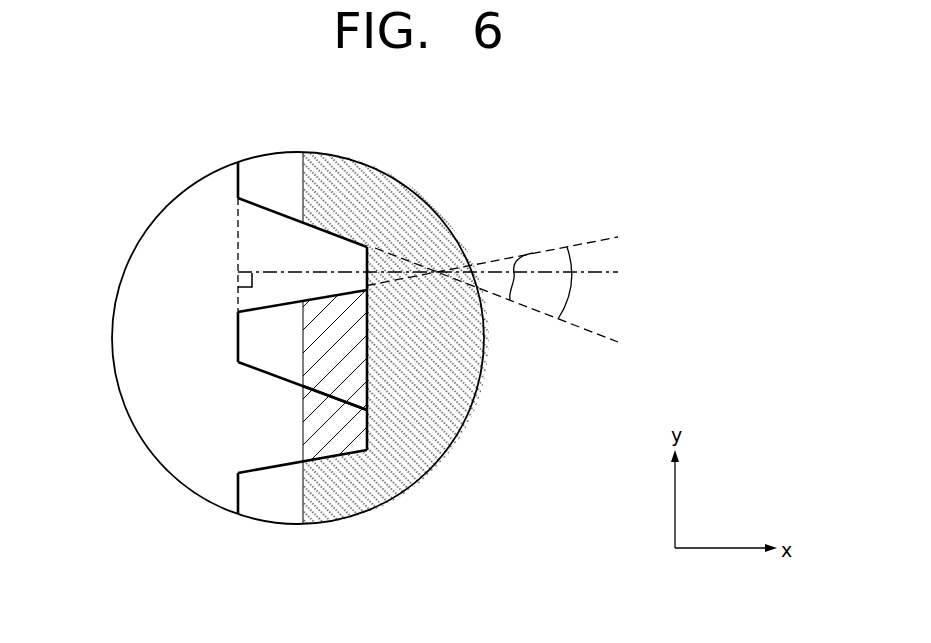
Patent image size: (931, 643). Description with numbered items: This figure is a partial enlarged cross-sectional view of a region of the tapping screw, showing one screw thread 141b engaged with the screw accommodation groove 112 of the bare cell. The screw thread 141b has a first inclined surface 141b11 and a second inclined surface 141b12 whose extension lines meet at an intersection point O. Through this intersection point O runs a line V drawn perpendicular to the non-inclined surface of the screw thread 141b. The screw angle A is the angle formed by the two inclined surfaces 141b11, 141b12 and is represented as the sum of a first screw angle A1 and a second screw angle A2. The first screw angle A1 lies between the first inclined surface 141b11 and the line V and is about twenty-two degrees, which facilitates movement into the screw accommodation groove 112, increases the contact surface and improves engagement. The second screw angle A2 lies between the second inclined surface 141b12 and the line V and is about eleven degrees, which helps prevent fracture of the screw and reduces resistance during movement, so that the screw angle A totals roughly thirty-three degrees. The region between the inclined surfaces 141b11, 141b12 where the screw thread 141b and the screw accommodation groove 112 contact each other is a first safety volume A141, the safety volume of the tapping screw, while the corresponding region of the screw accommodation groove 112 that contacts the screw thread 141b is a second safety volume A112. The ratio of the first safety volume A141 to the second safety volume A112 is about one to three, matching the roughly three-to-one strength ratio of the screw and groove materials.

The screw accommodation groove 112 is at (390, 200).
The screw thread 141b is at (205, 218).
The first inclined surface 141b11 is at (330, 233).
The second inclined surface 141b12 is at (335, 291).
The first safety volume A141 is at (335, 435).
The second safety volume A112 is at (353, 370).
The line V is at (264, 273).
The intersection point O is at (438, 270).
The screw angle A is at (574, 283).
The first screw angle A1 is at (528, 287).
The second screw angle A2 is at (517, 258).